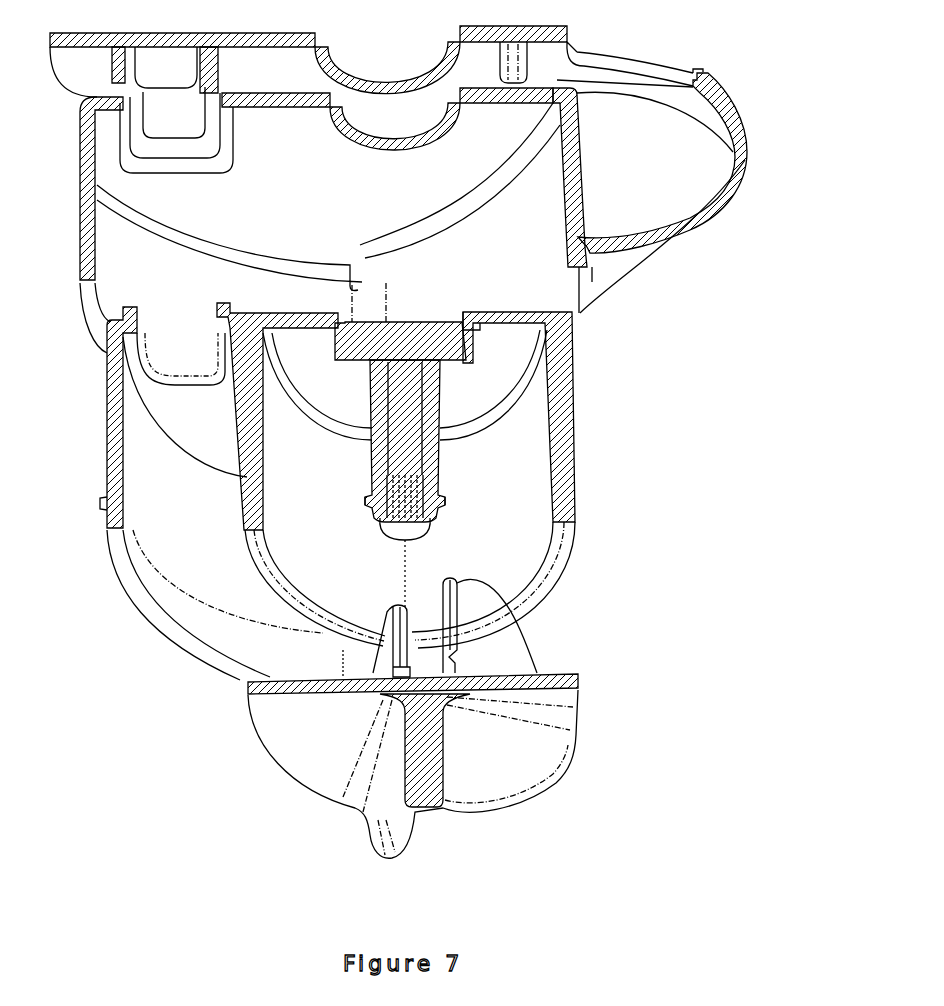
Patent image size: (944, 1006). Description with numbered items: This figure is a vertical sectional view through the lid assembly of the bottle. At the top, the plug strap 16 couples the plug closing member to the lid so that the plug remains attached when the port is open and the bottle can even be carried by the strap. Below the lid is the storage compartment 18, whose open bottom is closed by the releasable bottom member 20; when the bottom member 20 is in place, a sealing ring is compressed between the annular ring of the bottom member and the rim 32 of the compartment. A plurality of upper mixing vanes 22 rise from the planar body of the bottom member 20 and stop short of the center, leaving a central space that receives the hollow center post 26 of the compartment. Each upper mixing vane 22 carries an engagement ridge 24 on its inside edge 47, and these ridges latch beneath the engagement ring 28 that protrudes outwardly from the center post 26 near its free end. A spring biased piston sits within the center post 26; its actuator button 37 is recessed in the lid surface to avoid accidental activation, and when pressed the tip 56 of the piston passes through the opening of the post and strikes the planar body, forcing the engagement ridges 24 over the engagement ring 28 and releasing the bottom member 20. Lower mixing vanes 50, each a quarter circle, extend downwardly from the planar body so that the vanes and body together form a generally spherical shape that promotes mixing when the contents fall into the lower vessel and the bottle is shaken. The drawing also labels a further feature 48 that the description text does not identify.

The plug strap 16 is at (715, 88).
The storage compartment 18 is at (297, 500).
The releasable bottom member 20 is at (250, 690).
The upper mixing vanes 22 is at (523, 645).
The engagement ridge 24 is at (453, 640).
The center post 26 is at (443, 427).
The engagement ring 28 is at (440, 537).
The rim 32 is at (250, 533).
The actuator button 37 is at (453, 313).
The inside edge 47 is at (392, 652).
The lip 48 is at (453, 603).
The lower mixing vanes 50 is at (373, 818).
The tip 56 is at (443, 498).